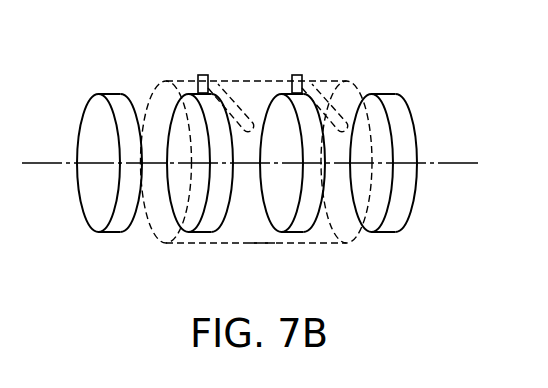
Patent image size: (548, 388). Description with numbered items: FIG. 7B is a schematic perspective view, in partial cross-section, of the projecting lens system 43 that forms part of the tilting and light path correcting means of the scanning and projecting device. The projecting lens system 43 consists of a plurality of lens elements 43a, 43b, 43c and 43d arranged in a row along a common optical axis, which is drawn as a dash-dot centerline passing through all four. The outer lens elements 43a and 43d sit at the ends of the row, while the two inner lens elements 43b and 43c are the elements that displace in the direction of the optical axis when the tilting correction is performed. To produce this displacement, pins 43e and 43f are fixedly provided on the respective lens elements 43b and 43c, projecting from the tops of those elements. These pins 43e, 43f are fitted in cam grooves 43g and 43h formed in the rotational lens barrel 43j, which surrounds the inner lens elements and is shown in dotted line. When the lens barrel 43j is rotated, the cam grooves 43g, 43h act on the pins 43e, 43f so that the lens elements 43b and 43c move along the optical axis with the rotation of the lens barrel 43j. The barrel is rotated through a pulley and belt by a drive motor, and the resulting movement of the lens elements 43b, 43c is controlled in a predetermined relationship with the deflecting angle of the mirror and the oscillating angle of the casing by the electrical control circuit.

The projecting lens system 43 is at (243, 243).
The lens element 43a is at (112, 233).
The lens element 43b is at (197, 238).
The lens element 43c is at (303, 233).
The lens element 43d is at (390, 233).
The pin 43e is at (201, 75).
The pin 43f is at (297, 75).
The cam groove 43g is at (241, 98).
The cam groove 43h is at (333, 104).
The rotational lens barrel 43j is at (261, 247).